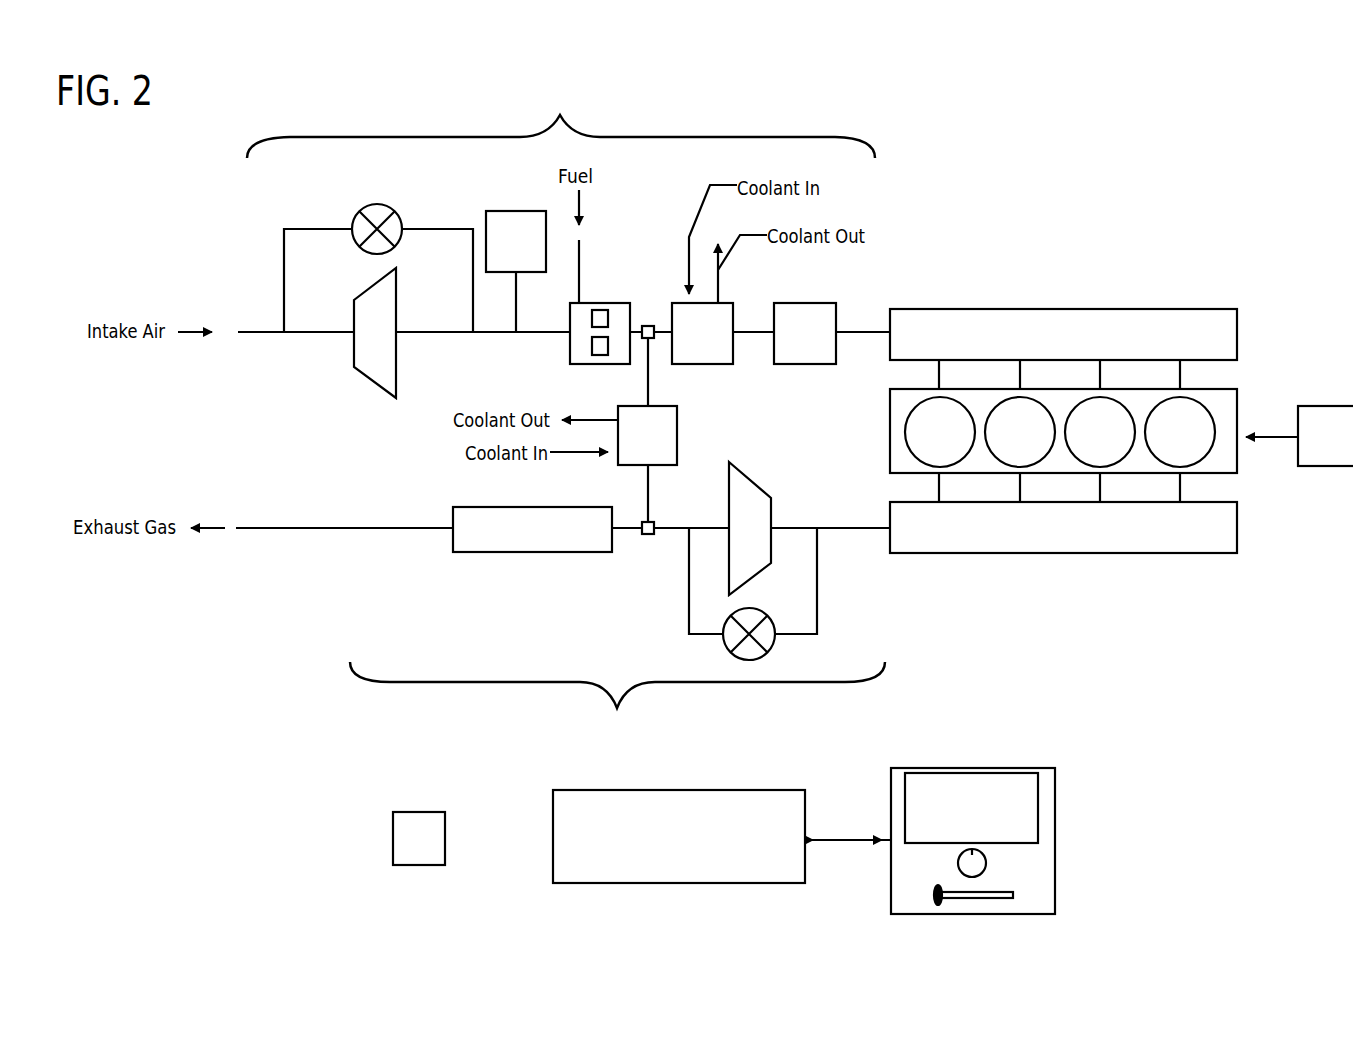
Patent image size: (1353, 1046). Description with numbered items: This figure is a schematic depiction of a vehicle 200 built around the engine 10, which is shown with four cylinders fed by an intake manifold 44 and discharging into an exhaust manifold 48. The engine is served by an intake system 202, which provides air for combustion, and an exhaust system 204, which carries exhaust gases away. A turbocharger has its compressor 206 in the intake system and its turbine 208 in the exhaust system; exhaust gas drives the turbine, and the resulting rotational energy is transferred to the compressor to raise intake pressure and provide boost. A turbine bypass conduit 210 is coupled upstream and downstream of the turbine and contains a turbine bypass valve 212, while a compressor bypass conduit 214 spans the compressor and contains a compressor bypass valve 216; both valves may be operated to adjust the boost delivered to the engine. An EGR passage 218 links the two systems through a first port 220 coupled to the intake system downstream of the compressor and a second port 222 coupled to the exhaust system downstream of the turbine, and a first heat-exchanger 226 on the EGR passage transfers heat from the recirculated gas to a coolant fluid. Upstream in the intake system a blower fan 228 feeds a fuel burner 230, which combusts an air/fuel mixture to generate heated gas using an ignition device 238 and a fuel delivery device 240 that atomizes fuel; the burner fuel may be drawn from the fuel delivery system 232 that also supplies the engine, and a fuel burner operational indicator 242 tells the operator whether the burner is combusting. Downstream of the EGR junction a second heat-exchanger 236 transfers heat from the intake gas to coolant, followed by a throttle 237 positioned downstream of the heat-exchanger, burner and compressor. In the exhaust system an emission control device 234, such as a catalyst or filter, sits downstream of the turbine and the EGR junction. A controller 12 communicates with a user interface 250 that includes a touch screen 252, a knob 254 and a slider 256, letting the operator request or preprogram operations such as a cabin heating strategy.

The engine 10 is at (1237, 394).
The controller 12 is at (755, 847).
The intake manifold 44 is at (1158, 346).
The exhaust manifold 48 is at (1168, 539).
The vehicle 200 is at (128, 164).
The intake system 202 is at (561, 126).
The exhaust system 204 is at (617, 697).
The compressor 206 is at (373, 290).
The turbine 208 is at (746, 475).
The turbine bypass conduit 210 is at (790, 636).
The turbine bypass valve 212 is at (751, 660).
The compressor bypass conduit 214 is at (323, 228).
The compressor bypass valve 216 is at (376, 204).
The EGR passage 218 is at (650, 470).
The first port 220 is at (648, 326).
The second port 222 is at (648, 535).
The first heat-exchanger 226 is at (662, 444).
The blower fan 228 is at (531, 254).
The fuel burner 230 is at (587, 303).
The fuel delivery system 232 is at (1298, 406).
The emission control device 234 is at (522, 507).
The second heat-exchanger 236 is at (717, 342).
The throttle 237 is at (820, 342).
The ignition device 238 is at (592, 318).
The fuel delivery device 240 is at (592, 345).
The fuel burner operational indicator 242 is at (400, 812).
The user interface 250 is at (895, 768).
The touch screen 252 is at (905, 786).
The knob 254 is at (987, 862).
The slider 256 is at (922, 895).